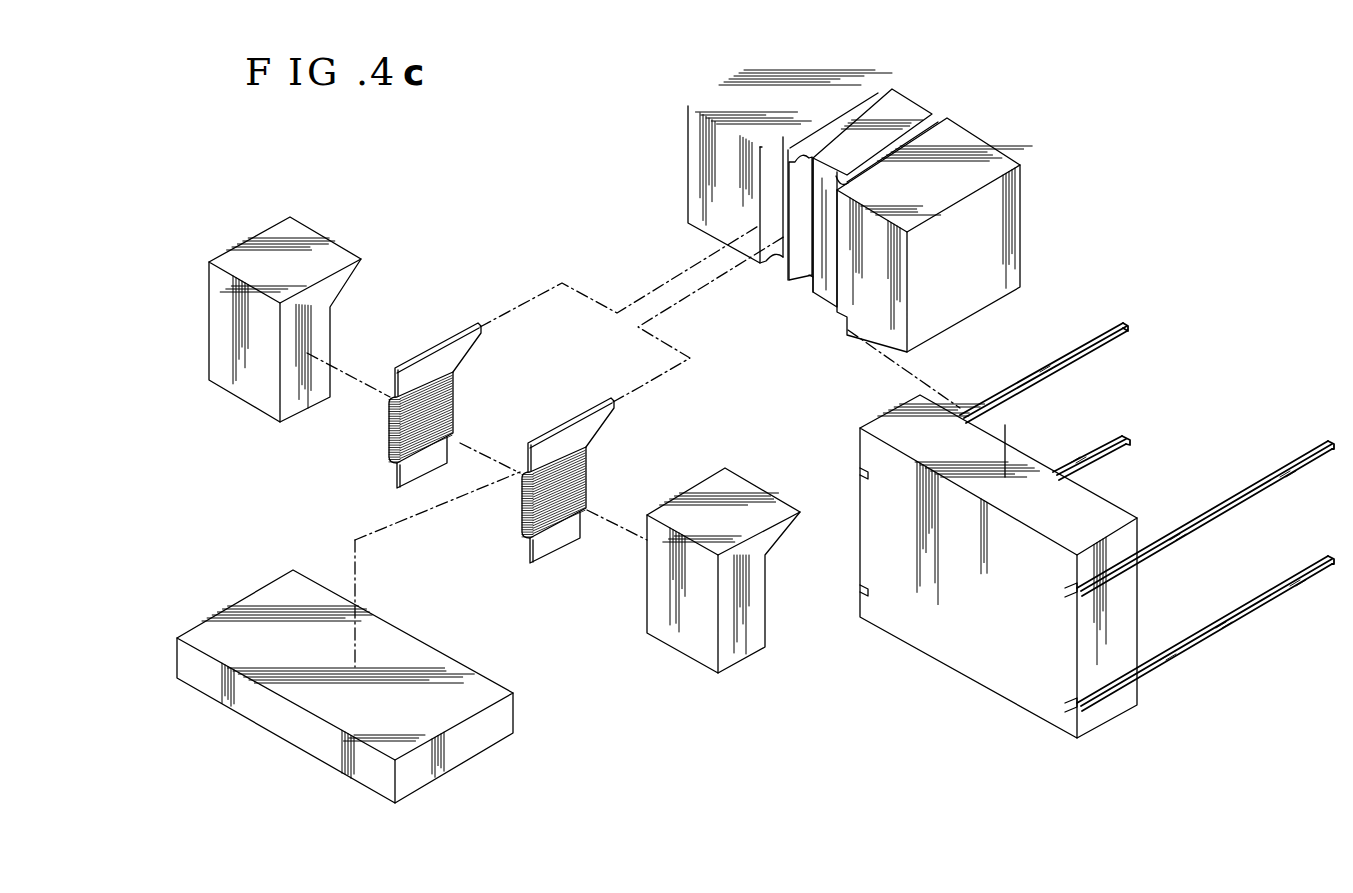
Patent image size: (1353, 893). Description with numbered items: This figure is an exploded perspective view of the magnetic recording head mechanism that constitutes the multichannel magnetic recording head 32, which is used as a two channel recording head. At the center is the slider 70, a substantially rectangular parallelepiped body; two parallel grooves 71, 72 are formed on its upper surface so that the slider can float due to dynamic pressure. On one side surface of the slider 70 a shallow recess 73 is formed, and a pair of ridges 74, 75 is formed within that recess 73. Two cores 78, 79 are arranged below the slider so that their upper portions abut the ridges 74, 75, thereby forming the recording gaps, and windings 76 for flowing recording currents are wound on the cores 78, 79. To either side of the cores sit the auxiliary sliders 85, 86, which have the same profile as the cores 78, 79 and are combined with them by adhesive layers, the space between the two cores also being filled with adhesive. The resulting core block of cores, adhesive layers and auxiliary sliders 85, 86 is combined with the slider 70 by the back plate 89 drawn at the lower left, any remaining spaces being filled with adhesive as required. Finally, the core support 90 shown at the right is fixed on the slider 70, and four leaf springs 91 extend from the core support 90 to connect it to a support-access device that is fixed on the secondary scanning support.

The multichannel magnetic recording head 32 is at (556, 172).
The slider 70 is at (725, 100).
The groove 71 is at (877, 95).
The groove 72 is at (933, 120).
The shallow recess 73 is at (838, 180).
The ridge 74 is at (782, 262).
The ridge 75 is at (803, 272).
The windings 76 is at (527, 490).
The core 78 is at (437, 360).
The core 79 is at (573, 435).
The auxiliary slider 85 is at (276, 250).
The auxiliary slider 86 is at (740, 487).
The back plate 89 is at (443, 670).
The core support 90 is at (950, 622).
The leaf springs 91 is at (1077, 458).